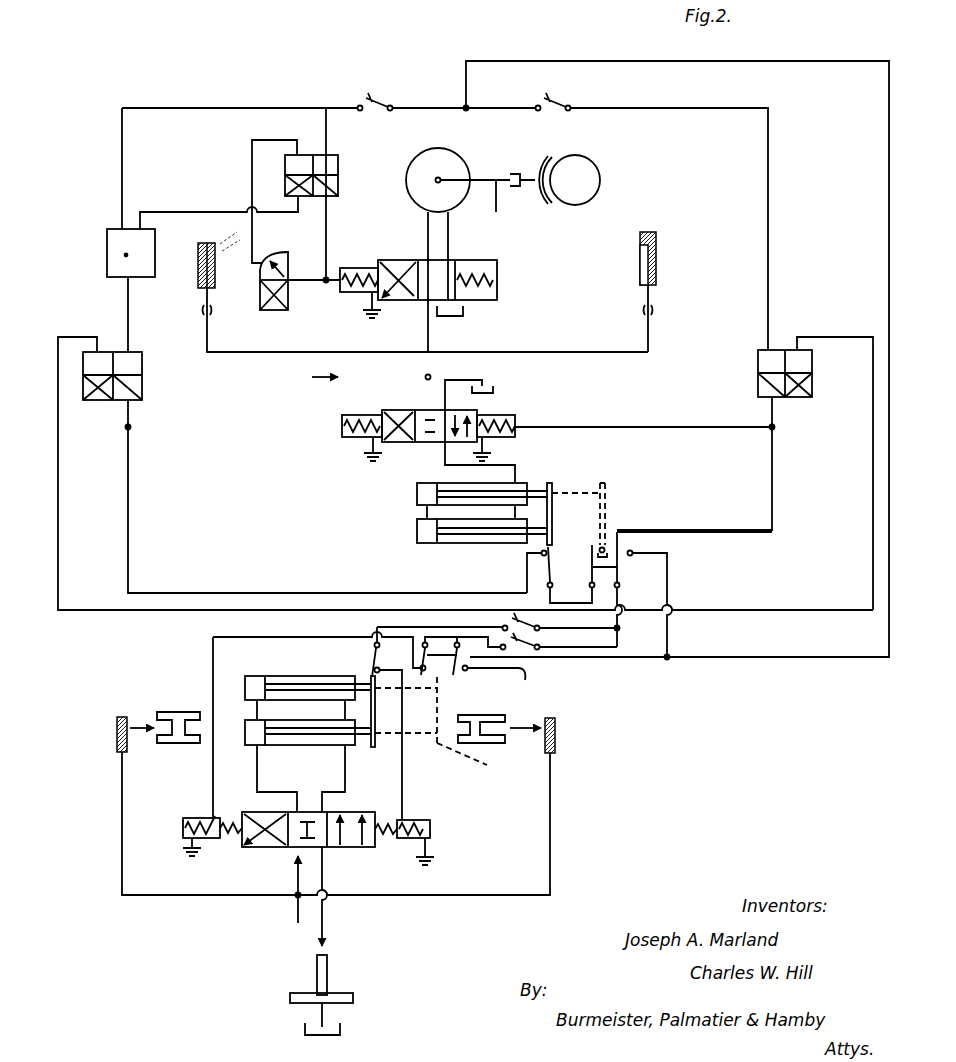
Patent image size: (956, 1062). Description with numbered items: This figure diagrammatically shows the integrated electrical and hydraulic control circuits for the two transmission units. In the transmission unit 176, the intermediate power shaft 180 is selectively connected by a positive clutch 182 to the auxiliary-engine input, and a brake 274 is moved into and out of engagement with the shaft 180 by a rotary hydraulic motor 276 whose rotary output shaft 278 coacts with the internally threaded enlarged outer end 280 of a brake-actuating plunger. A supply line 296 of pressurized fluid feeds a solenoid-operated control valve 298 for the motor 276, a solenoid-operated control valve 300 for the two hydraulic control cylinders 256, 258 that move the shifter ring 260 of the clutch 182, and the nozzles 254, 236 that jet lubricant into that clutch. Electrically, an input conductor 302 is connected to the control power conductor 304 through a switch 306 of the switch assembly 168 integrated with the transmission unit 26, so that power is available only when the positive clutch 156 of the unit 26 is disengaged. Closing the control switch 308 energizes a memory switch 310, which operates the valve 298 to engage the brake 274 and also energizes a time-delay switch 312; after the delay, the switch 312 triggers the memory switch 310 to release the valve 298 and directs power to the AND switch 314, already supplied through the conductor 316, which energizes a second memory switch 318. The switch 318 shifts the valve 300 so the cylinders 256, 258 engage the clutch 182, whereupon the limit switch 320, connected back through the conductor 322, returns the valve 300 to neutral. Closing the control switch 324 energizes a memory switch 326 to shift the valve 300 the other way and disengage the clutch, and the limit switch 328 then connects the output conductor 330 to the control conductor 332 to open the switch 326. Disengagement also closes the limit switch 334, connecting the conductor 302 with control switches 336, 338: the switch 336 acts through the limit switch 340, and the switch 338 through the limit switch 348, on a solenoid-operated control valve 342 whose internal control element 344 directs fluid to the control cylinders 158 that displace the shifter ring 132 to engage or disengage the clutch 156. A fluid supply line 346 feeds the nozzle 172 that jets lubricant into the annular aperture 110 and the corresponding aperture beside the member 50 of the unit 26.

The transmission unit 176 is at (222, 98).
The control switch 308 is at (393, 100).
The control power conductor 304 is at (612, 61).
The control switch 324 is at (572, 100).
The conductor 316 is at (122, 153).
The AND switch 314 is at (124, 254).
The memory switch 310 is at (338, 175).
The time-delay switch 312 is at (280, 310).
The solenoid-operated control valve 298 is at (395, 252).
The rotary hydraulic motor 276 is at (470, 148).
The rotary output shaft 278 is at (499, 209).
The enlarged outer end 280 is at (523, 172).
The brake 274 is at (544, 205).
The intermediate power shaft 180 is at (600, 180).
The nozzle 236 is at (658, 262).
The nozzle 254 is at (198, 283).
The memory switch 318 is at (142, 392).
The conductor 322 is at (50, 590).
The control conductor 332 is at (837, 337).
The supply line 296 is at (347, 380).
The solenoid-operated control valve 300 is at (495, 410).
The input conductor 302 is at (416, 444).
The output conductor 330 is at (772, 482).
The memory switch 326 is at (758, 384).
The hydraulic control cylinder 256 is at (527, 483).
The hydraulic control cylinder 258 is at (437, 544).
The shifter ring 260 is at (556, 491).
The positive clutch 182 is at (608, 508).
The limit switch 328 is at (600, 548).
The limit switch 320 is at (540, 556).
The limit switch 334 is at (636, 552).
The control switch 336 is at (540, 626).
The limit switch 340 is at (374, 655).
The limit switch 348 is at (356, 675).
The switch assembly 168 is at (456, 673).
The switch 306 is at (559, 665).
The control switch 338 is at (565, 657).
The transmission unit 26 is at (202, 688).
The clamp jaw 50 is at (156, 724).
The annular aperture 110 is at (508, 722).
The nozzle 172 is at (117, 743).
The control cylinder 158 is at (300, 676).
The shifter ring 132 is at (375, 748).
The positive clutch 156 is at (423, 767).
The internal control element 344 is at (286, 847).
The solenoid-operated control valve 342 is at (346, 850).
The fluid supply line 346 is at (297, 910).